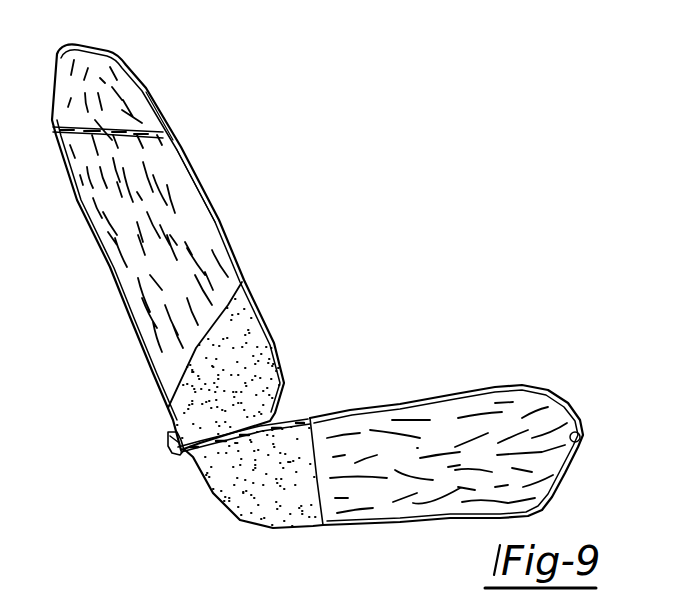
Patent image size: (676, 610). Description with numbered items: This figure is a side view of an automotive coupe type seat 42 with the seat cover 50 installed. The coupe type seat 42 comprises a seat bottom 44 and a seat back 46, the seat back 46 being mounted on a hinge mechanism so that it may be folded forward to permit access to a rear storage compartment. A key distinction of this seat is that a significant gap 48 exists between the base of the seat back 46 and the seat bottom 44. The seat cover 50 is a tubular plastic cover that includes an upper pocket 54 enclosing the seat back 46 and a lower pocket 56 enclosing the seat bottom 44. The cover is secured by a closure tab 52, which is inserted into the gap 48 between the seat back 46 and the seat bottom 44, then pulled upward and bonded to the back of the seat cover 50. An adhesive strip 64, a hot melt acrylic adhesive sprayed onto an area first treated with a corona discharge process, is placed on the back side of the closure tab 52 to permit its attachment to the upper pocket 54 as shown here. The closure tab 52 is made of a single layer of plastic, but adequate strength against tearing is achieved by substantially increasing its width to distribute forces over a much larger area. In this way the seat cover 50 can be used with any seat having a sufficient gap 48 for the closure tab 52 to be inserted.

The coupe type seat 42 is at (162, 259).
The seat bottom 44 is at (584, 439).
The seat back 46 is at (190, 198).
The gap 48 is at (278, 412).
The seat cover 50 is at (143, 82).
The closure tab 52 is at (173, 458).
The upper pocket 54 is at (177, 145).
The lower pocket 56 is at (563, 393).
The adhesive strip 64 is at (170, 433).